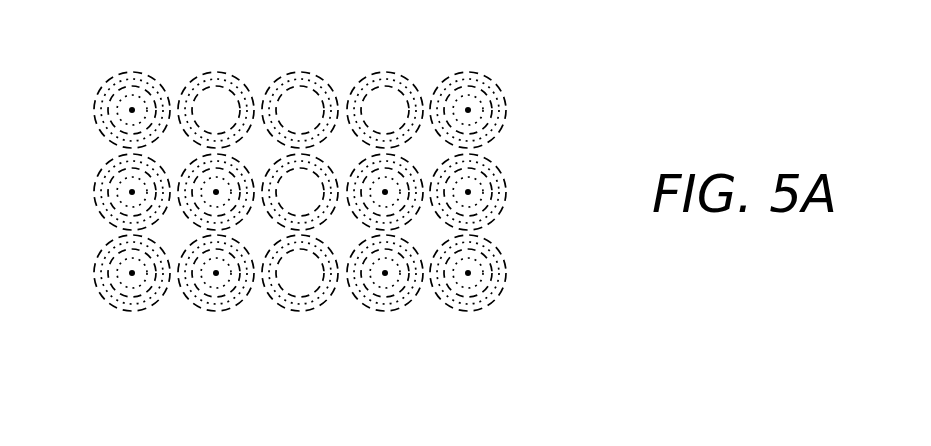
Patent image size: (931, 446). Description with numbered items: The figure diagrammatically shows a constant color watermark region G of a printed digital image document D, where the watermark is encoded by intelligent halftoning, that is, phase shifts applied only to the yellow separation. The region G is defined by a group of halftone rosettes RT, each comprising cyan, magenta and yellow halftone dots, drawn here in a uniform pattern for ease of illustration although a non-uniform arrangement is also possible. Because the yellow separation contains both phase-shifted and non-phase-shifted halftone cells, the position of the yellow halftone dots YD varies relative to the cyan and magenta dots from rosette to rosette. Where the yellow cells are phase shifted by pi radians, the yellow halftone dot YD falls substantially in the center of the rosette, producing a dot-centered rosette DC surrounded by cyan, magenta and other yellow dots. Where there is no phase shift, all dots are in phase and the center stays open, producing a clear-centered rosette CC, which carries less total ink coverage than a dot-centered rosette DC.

The constant color watermark region G is at (83, 68).
The dot-centered rosette DC is at (118, 71).
The clear-centered rosette CC is at (287, 74).
The halftone rosette RT is at (359, 71).
The yellow halftone dot YD is at (468, 110).
The printed digital image document D is at (528, 157).